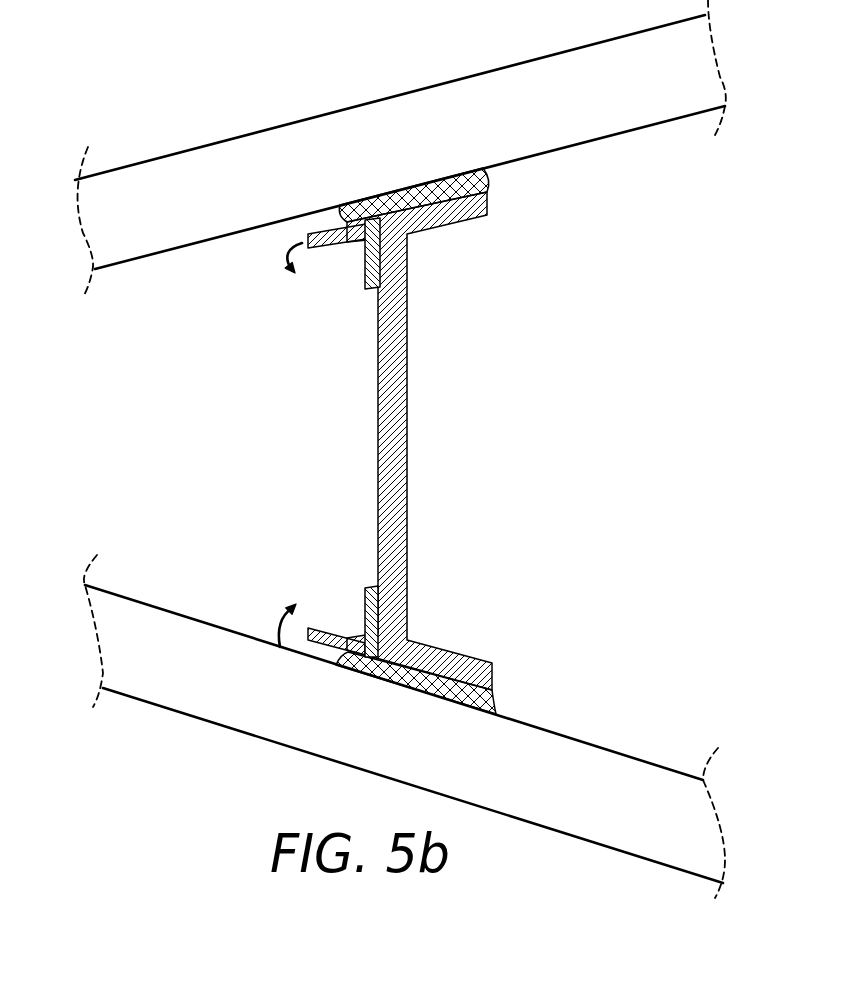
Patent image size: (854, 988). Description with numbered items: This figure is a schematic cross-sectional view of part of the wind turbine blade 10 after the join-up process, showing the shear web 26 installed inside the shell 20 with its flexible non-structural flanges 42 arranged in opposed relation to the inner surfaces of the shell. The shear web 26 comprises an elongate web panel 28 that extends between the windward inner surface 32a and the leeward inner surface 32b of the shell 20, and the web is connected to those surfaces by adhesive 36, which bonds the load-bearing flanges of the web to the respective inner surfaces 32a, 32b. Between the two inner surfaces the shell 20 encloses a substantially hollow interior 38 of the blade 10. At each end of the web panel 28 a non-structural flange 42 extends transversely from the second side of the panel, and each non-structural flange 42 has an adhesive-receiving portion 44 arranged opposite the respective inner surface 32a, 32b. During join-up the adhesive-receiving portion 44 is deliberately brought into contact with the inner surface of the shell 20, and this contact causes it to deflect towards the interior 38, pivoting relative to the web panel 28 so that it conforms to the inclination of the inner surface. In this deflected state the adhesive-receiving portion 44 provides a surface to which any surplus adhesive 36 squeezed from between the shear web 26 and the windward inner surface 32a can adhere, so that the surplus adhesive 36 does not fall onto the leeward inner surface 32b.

The wind turbine blade 10 is at (138, 62).
The shell 20 is at (258, 115).
The shear web 26 is at (460, 433).
The web panel 28 is at (402, 507).
The windward inner surface 32a is at (157, 253).
The leeward inner surface 32b is at (188, 617).
The adhesive 36 is at (485, 175).
The hollow interior 38 is at (260, 429).
The non-structural flange 42 is at (352, 285).
The adhesive-receiving portion 44 is at (340, 243).